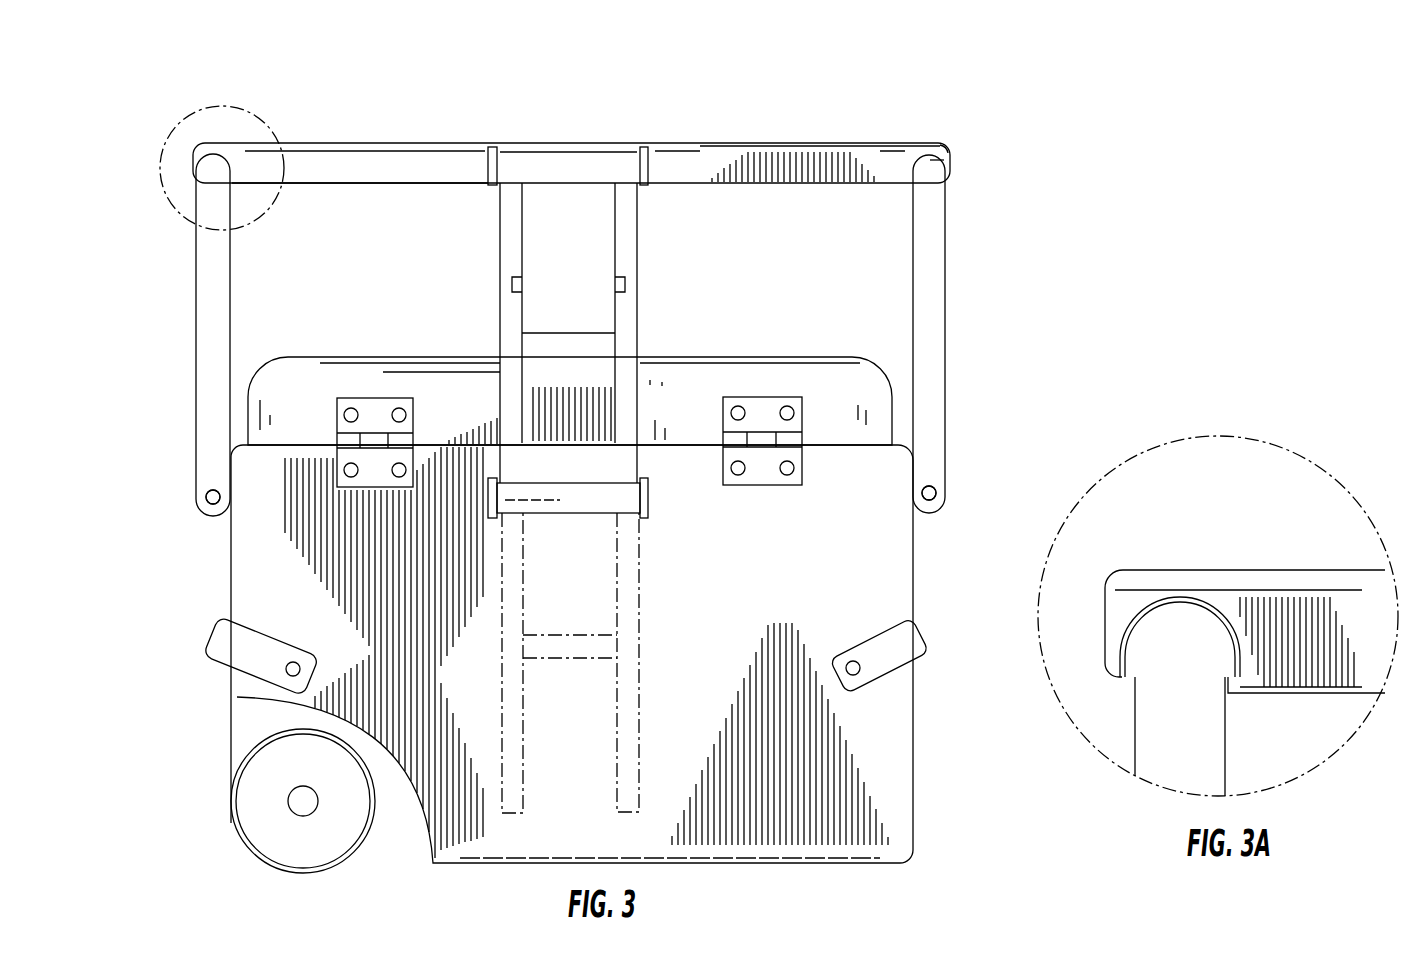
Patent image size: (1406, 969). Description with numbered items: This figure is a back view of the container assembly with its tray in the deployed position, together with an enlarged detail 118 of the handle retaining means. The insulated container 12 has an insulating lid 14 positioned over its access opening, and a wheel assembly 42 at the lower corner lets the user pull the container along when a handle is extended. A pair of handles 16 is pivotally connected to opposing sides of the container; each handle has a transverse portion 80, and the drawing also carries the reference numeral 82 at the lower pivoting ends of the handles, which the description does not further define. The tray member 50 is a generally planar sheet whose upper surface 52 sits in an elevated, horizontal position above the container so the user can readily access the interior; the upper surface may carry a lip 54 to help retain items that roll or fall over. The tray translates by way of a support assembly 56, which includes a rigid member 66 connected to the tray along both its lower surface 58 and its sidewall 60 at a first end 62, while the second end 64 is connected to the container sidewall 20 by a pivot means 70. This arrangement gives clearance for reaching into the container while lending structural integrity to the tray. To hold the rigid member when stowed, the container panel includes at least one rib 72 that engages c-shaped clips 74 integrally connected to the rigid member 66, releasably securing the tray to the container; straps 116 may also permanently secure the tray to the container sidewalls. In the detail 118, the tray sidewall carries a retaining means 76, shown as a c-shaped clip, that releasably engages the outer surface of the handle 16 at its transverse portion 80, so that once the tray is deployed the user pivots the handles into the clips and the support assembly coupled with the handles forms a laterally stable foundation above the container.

In FIG. 3, the insulated container 12 is at (962, 643).
In FIG. 3, the insulating lid 14 is at (835, 409).
In FIG. 3, the handle 16 is at (962, 272).
In FIG. 3A, the handle 16 is at (1252, 718).
In FIG. 3, the sidewall 20 is at (705, 731).
In FIG. 3, the wheel assembly 42 is at (234, 823).
In FIG. 3, the tray member 50 is at (390, 176).
In FIG. 3A, the tray member 50 is at (1376, 660).
In FIG. 3, the upper surface 52 is at (890, 150).
In FIG. 3, the lip 54 is at (912, 135).
In FIG. 3, the support assembly 56 is at (1015, 180).
In FIG. 3, the lower surface 58 is at (437, 184).
In FIG. 3, the sidewall 60 is at (772, 180).
In FIG. 3, the first end 62 is at (660, 169).
In FIG. 3, the second end 64 is at (567, 498).
In FIG. 3, the rigid member 66 is at (480, 340).
In FIG. 3, the pivot means 70 is at (642, 520).
In FIG. 3, the rib 72 is at (642, 620).
In FIG. 3, the c-shaped clips 74 is at (512, 285).
In FIG. 3A, the retaining means 76 is at (1158, 615).
In FIG. 3A, the transverse portion 80 is at (1172, 645).
In FIG. 3, the pivot connection 82 is at (193, 537).
In FIG. 3, the straps 116 is at (880, 665).
In FIG. 3, the detail 118 is at (262, 115).
In FIG. 3A, the detail 118 is at (1307, 460).